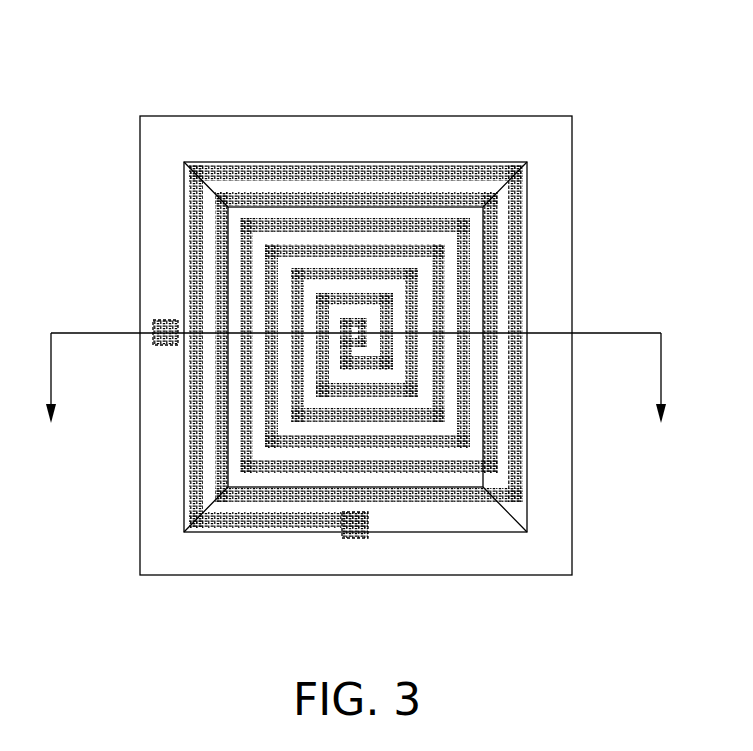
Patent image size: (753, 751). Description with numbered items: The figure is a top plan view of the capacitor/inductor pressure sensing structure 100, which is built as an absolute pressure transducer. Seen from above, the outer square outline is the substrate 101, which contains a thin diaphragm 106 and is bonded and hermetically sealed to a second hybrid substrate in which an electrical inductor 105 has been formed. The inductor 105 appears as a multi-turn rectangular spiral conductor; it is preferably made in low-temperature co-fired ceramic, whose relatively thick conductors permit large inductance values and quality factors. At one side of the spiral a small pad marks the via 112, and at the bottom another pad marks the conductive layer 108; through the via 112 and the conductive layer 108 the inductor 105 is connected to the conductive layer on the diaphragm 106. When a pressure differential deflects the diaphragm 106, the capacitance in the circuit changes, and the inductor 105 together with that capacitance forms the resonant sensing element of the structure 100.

The pressure sensing structure 100 is at (377, 100).
The substrate 101 is at (155, 172).
The electrical inductor 105 is at (518, 260).
The thin diaphragm 106 is at (237, 262).
The conductive layer 108 is at (355, 522).
The via 112 is at (165, 325).